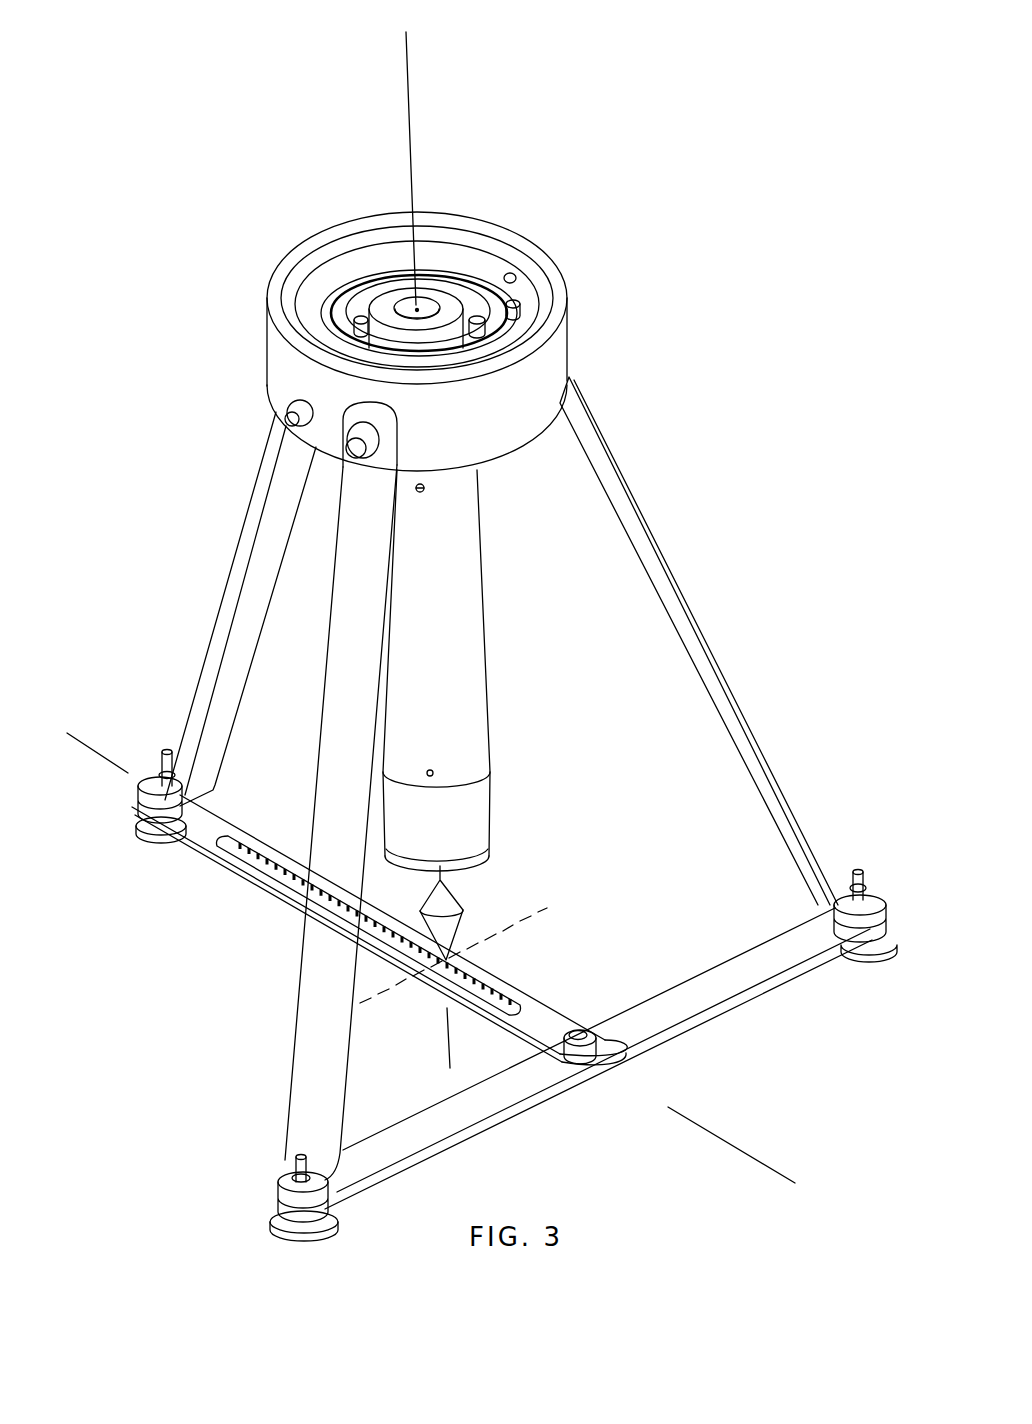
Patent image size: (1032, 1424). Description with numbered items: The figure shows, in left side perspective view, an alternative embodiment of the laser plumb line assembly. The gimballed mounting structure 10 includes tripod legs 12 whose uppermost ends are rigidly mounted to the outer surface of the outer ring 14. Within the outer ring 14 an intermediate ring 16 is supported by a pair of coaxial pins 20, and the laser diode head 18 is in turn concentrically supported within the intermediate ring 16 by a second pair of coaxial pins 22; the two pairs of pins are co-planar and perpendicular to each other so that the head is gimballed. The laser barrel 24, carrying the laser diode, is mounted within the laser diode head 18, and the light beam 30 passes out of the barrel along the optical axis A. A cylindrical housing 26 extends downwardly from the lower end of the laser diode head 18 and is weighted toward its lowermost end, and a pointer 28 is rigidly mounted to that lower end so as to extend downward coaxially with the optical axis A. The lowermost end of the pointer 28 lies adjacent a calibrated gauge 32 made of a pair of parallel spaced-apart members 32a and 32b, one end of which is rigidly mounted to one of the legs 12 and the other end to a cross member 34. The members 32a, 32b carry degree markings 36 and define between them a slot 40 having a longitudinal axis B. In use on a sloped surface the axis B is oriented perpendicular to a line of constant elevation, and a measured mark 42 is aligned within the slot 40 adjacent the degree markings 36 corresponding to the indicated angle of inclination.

The gimballed mounting structure 10 is at (790, 343).
The tripod legs 12 is at (760, 745).
The outer ring 14 is at (547, 402).
The intermediate ring 16 is at (515, 310).
The laser diode head 18 is at (453, 302).
The coaxial pins 20 is at (517, 290).
The coaxial pins 22 is at (357, 318).
The laser barrel 24 is at (433, 322).
The cylindrical housing 26 is at (470, 610).
The pointer 28 is at (448, 907).
The light beam 30 is at (410, 110).
The calibrated gauge 32 is at (372, 831).
The member 32a is at (295, 845).
The member 32b is at (267, 887).
The cross member 34 is at (717, 1017).
The degree markings 36 is at (287, 890).
The slot 40 is at (267, 823).
The measured mark 42 is at (480, 977).
The optical axis A is at (427, 548).
The longitudinal axis B is at (437, 961).